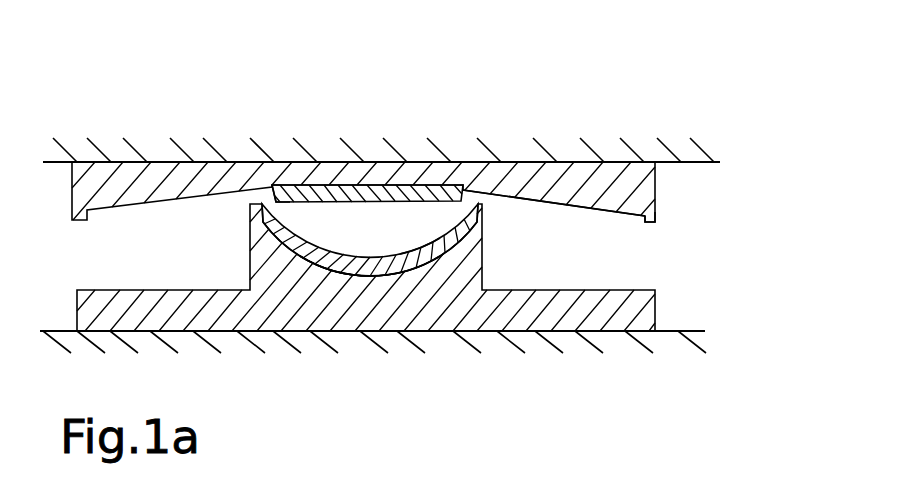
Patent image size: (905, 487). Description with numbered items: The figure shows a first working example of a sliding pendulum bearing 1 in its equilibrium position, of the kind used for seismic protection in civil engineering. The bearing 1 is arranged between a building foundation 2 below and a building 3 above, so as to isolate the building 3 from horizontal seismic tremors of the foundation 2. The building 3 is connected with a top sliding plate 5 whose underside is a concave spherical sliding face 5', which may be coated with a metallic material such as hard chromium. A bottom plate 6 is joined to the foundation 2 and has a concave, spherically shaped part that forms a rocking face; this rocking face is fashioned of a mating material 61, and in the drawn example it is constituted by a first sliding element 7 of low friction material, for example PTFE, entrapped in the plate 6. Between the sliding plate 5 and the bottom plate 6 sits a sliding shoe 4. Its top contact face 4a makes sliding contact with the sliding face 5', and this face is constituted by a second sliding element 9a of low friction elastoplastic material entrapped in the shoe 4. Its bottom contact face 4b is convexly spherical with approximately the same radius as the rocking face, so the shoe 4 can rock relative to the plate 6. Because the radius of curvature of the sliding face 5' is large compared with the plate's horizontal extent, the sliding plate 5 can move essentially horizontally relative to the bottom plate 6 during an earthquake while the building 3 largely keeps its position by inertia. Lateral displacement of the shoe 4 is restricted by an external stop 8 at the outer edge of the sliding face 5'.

The sliding pendulum bearing 1 is at (603, 80).
The building foundation 2 is at (673, 350).
The building 3 is at (677, 147).
The sliding shoe 4 is at (320, 223).
The top contact face 4a is at (437, 182).
The bottom contact face 4b is at (383, 263).
The top sliding plate 5 is at (357, 141).
The concave spherical sliding face 5' is at (554, 303).
The bottom plate 6 is at (345, 253).
The mating material 61 is at (422, 252).
The first sliding element 7 is at (348, 262).
The external stop 8 is at (650, 218).
The second sliding element 9a is at (278, 187).